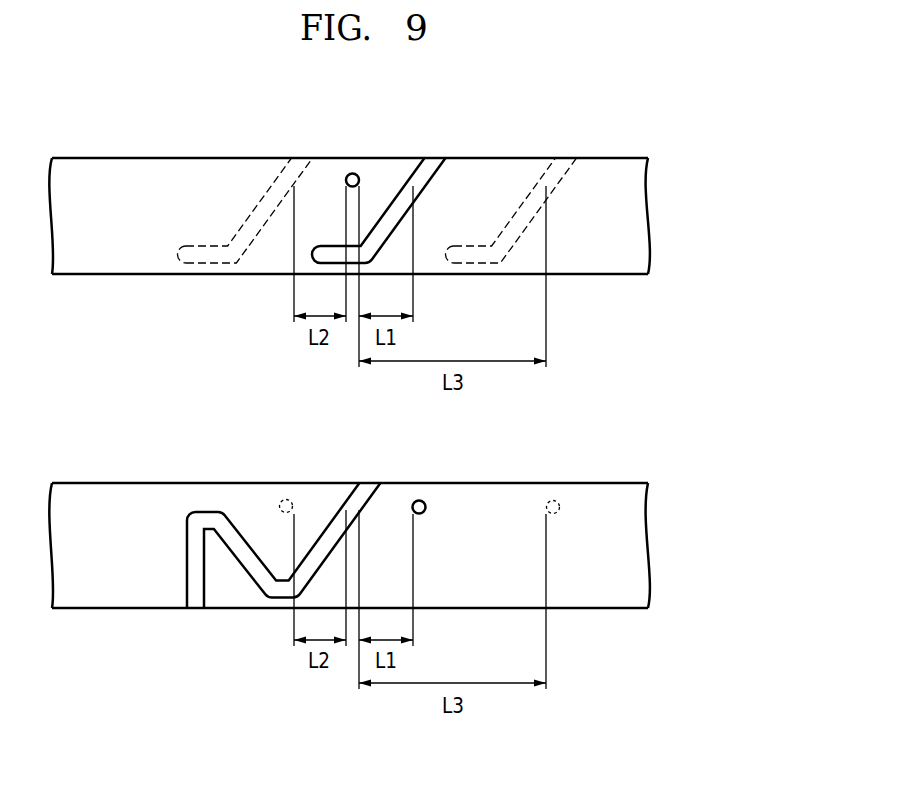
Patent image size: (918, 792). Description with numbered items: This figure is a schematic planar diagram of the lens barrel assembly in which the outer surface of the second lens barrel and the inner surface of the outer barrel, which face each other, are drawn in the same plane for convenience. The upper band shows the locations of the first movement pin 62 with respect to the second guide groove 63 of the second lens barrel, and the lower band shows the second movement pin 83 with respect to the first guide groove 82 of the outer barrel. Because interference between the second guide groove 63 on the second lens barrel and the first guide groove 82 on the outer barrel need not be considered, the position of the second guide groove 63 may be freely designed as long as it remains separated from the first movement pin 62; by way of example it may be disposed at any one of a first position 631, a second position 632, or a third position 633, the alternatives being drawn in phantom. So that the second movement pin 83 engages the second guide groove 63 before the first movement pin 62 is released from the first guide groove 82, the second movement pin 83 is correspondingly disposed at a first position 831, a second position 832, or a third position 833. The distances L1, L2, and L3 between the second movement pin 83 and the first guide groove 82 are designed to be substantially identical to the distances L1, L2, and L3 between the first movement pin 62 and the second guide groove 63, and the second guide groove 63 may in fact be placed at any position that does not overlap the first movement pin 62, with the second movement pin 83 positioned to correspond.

The first movement pin 62 is at (353, 173).
The second guide groove 63 is at (412, 176).
The first position 631 is at (428, 170).
The second position 632 is at (270, 187).
The third position 633 is at (537, 190).
The first guide groove 82 is at (357, 500).
The second movement pin 83 is at (286, 520).
The first position 831 is at (420, 499).
The second position 832 is at (281, 499).
The third position 833 is at (553, 499).